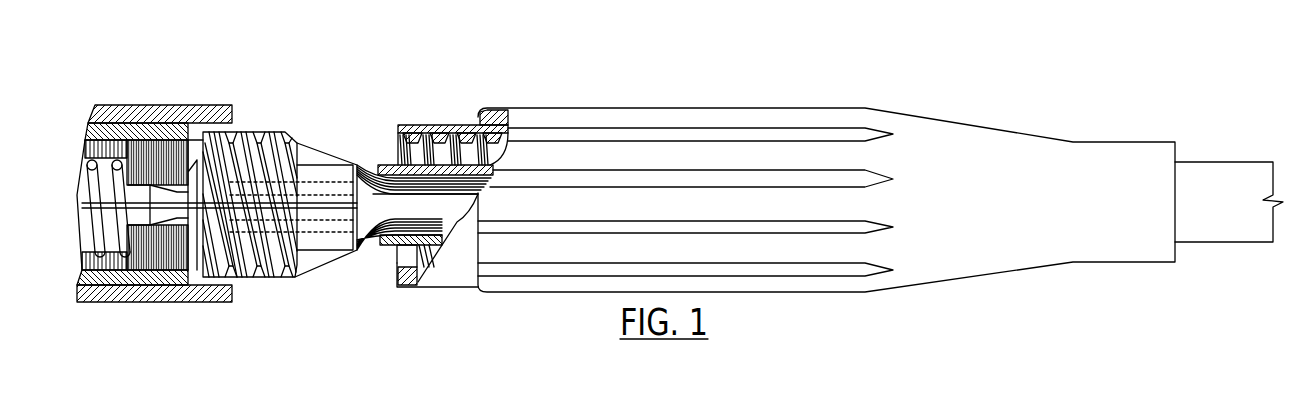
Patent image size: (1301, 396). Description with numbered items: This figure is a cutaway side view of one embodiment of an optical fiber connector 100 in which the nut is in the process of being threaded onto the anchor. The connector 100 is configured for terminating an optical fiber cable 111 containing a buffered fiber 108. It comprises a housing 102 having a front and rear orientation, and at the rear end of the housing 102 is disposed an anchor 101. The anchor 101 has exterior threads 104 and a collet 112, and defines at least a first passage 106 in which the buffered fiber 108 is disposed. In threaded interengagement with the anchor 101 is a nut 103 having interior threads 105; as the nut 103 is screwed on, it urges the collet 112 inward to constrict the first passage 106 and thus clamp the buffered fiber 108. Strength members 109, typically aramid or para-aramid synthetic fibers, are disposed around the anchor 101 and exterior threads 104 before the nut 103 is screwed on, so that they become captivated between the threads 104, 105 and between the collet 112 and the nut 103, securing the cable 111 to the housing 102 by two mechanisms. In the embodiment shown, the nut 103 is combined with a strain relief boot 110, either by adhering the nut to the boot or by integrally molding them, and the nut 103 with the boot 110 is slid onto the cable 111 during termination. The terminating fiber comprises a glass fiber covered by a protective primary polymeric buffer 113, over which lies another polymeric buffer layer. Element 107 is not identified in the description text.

The optical fiber connector 100 is at (303, 62).
The anchor 101 is at (197, 168).
The housing 102 is at (135, 104).
The nut 103 is at (453, 150).
The exterior threads 104 is at (265, 145).
The interior threads 105 is at (398, 130).
The first passage 106 is at (260, 278).
The cable fitting 107 is at (408, 207).
The buffered fiber 108 is at (390, 236).
The strength members 109 is at (327, 262).
The strain relief boot 110 is at (540, 155).
The optical fiber cable 111 is at (1213, 182).
The collet 112 is at (330, 175).
The primary polymeric buffer 113 is at (138, 213).